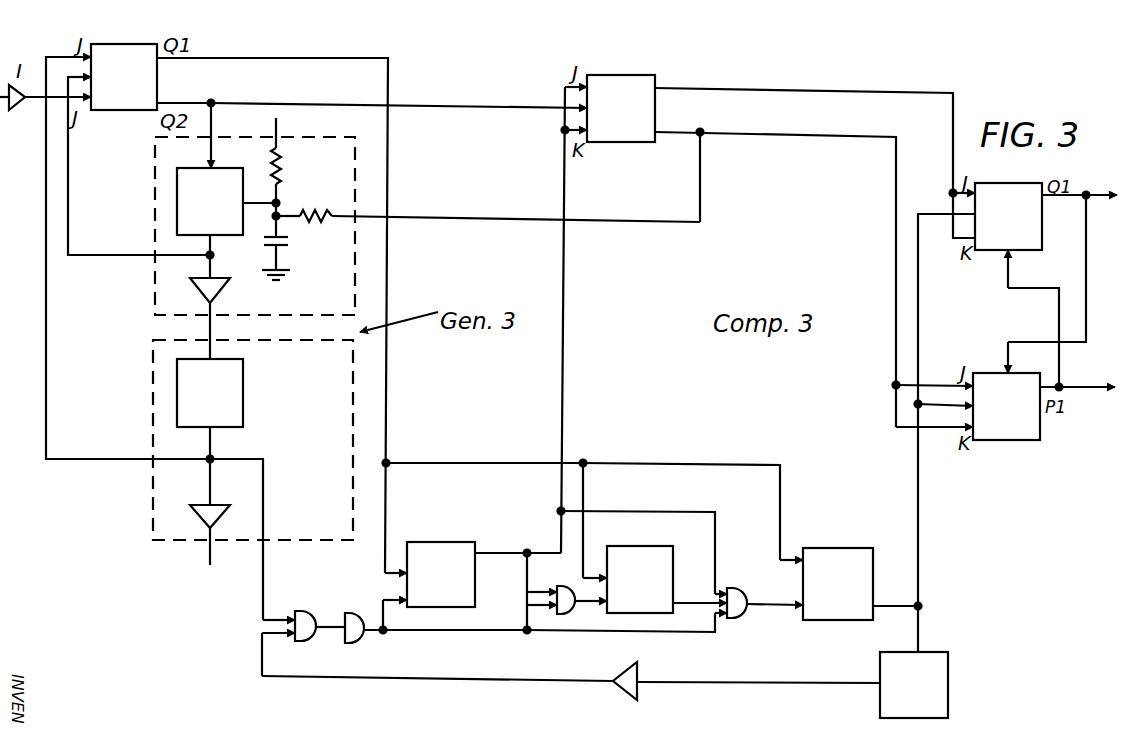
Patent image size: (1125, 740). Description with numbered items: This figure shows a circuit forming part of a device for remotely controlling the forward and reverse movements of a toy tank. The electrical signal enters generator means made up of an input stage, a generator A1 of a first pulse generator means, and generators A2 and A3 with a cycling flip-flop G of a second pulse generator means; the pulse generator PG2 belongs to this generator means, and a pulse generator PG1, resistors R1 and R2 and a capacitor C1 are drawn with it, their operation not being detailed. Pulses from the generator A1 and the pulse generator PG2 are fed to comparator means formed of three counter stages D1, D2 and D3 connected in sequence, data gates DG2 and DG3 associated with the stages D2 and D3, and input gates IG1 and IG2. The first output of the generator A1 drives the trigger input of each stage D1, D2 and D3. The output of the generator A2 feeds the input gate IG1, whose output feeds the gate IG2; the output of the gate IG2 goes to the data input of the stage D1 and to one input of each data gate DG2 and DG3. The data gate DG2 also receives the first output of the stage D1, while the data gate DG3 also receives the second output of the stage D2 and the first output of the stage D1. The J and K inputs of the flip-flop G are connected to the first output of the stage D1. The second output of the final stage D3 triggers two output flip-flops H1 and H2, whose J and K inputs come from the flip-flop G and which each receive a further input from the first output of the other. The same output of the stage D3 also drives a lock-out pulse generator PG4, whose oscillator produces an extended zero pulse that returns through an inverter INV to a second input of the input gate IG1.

The generator A1 is at (138, 90).
The generator A2 is at (155, 212).
The generator A3 is at (153, 408).
The pulse generator PG1 is at (230, 220).
The pulse generator PG2 is at (230, 411).
The lock-out pulse generator PG4 is at (914, 685).
The resistor R1 is at (282, 168).
The resistor R2 is at (304, 204).
The capacitor C1 is at (294, 251).
The cycling flip-flop G is at (628, 126).
The output flip-flop H1 is at (1008, 216).
The output flip-flop H2 is at (1006, 406).
The counter stage D1 is at (447, 576).
The counter stage D2 is at (654, 587).
The counter stage D3 is at (841, 584).
The data gate DG2 is at (557, 588).
The data gate DG3 is at (752, 619).
The input gate IG1 is at (307, 612).
The input gate IG2 is at (352, 644).
The inverter INV is at (571, 677).